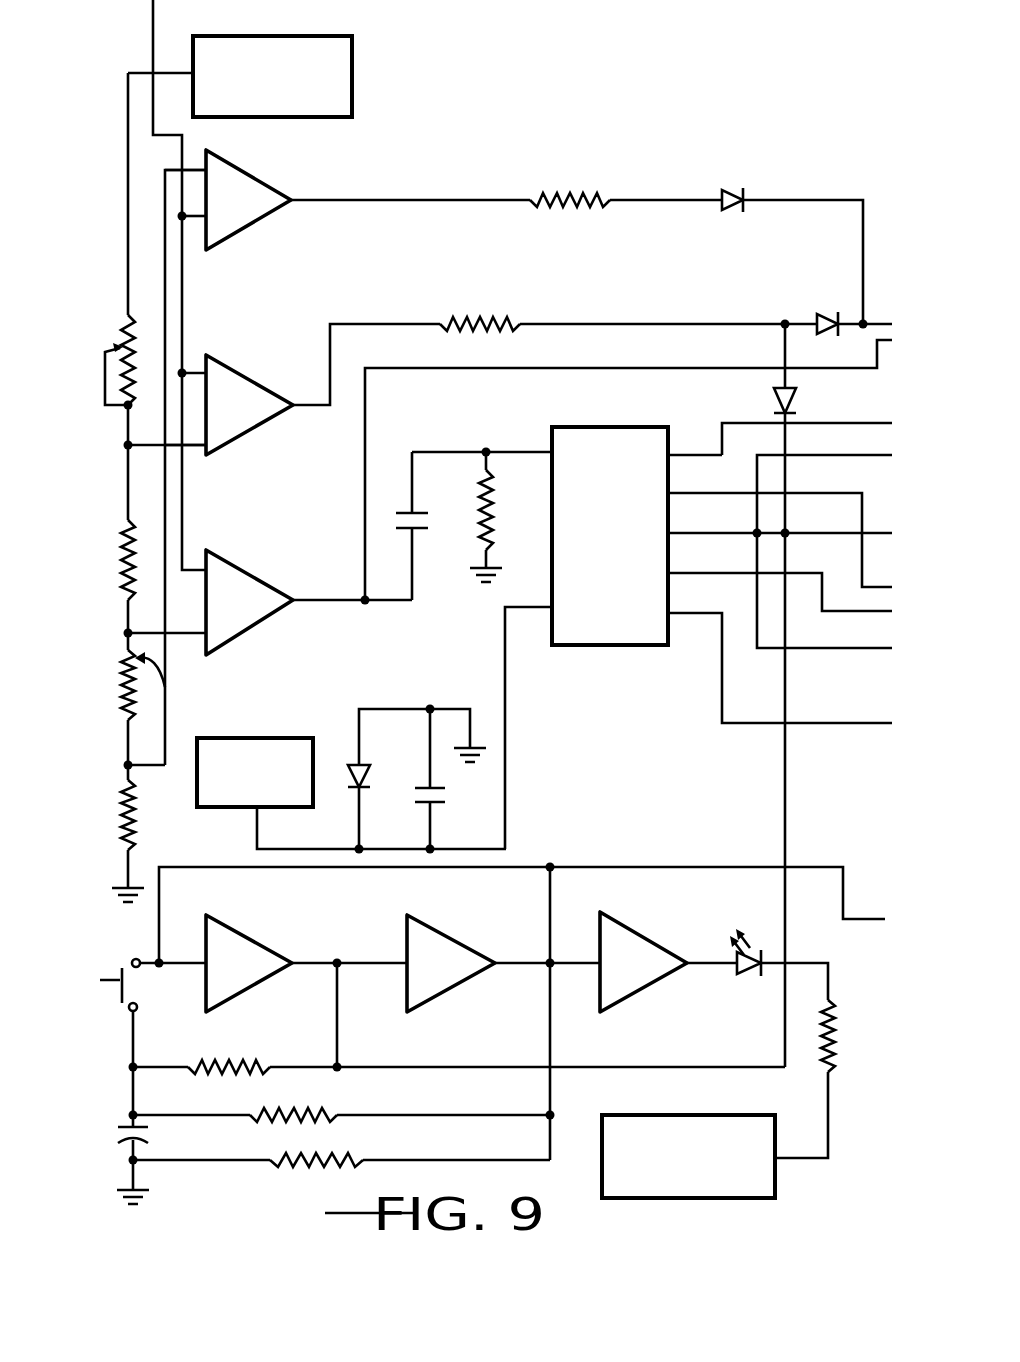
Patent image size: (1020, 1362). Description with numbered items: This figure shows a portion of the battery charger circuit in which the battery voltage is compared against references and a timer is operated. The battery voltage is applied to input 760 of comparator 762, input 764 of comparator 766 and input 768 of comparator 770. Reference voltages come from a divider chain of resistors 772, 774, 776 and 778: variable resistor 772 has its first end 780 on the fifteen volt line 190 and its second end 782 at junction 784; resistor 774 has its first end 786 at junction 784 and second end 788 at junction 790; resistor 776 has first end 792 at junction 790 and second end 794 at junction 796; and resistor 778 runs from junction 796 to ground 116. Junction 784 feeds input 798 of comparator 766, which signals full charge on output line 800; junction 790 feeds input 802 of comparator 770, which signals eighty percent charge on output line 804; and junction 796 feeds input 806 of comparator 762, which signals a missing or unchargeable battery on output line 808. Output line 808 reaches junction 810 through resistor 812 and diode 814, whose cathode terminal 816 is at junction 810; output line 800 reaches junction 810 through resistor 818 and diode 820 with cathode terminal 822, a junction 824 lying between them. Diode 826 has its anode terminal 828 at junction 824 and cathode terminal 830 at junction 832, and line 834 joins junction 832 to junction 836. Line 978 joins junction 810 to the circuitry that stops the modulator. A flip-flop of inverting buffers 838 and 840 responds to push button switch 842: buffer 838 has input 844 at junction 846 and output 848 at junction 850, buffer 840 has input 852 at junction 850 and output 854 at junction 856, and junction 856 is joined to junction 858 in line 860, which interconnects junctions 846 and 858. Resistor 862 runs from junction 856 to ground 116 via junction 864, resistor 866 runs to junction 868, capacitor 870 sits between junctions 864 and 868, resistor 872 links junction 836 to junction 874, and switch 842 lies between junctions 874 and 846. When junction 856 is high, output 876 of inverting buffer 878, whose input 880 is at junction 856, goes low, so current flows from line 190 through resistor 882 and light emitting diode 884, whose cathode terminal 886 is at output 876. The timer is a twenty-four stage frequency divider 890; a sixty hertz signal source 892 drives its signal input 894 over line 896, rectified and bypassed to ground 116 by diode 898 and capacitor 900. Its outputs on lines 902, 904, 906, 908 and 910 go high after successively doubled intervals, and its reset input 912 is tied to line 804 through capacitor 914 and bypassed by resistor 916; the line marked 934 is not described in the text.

The 15 volt line 190 is at (352, 73).
The ground 116 is at (136, 885).
The input of comparator 762 760 is at (186, 220).
The comparator 762 is at (262, 185).
The input of comparator 766 764 is at (206, 357).
The comparator 766 is at (258, 382).
The input of comparator 770 768 is at (206, 556).
The comparator 770 is at (258, 578).
The variable resistor 772 is at (122, 345).
The resistor 774 is at (124, 560).
The resistor 776 is at (124, 705).
The resistor 778 is at (136, 797).
The first end of resistor 772 780 is at (127, 272).
The second end of resistor 772 782 is at (113, 419).
The junction 784 is at (127, 445).
The first end of resistor 774 786 is at (124, 520).
The second end of resistor 774 788 is at (126, 605).
The junction 790 is at (126, 640).
The first end of resistor 776 792 is at (168, 690).
The second end of resistor 776 794 is at (133, 752).
The junction 796 is at (127, 765).
The input of comparator 766 798 is at (206, 455).
The output line 800 is at (340, 323).
The input of comparator 770 802 is at (206, 652).
The output line 804 is at (320, 604).
The input of comparator 762 806 is at (206, 158).
The output line 808 is at (373, 200).
The junction 810 is at (863, 330).
The resistor 812 is at (540, 200).
The diode 814 is at (728, 195).
The cathode terminal of diode 814 816 is at (768, 200).
The resistor 818 is at (463, 323).
The diode 820 is at (815, 318).
The cathode terminal of diode 820 822 is at (838, 320).
The junction 824 is at (780, 322).
The diode 826 is at (797, 400).
The anode terminal of diode 826 828 is at (783, 358).
The cathode terminal of diode 826 830 is at (788, 437).
The junction 832 is at (786, 533).
The line 834 is at (786, 800).
The junction 836 is at (340, 1067).
The inverting buffer 838 is at (240, 935).
The inverting buffer 840 is at (478, 912).
The push button switch 842 is at (113, 977).
The input of inverting buffer 838 844 is at (182, 948).
The junction 846 is at (159, 968).
The output of inverting buffer 838 848 is at (312, 963).
The junction 850 is at (340, 962).
The input of inverting buffer 840 852 is at (360, 975).
The output of inverting buffer 840 854 is at (512, 963).
The junction 856 is at (530, 967).
The junction 858 is at (551, 866).
The line 860 is at (226, 867).
The resistor 862 is at (318, 1158).
The junction 864 is at (137, 1158).
The resistor 866 is at (288, 1113).
The junction 868 is at (137, 1114).
The capacitor 870 is at (125, 1125).
The resistor 872 is at (262, 1067).
The junction 874 is at (137, 1066).
The output of inverting buffer 878 876 is at (692, 967).
The inverting buffer 878 is at (660, 909).
The input of inverting buffer 878 880 is at (577, 967).
The resistor 882 is at (836, 1030).
The light emitting diode 884 is at (748, 978).
The cathode terminal of diode 884 886 is at (724, 957).
The frequency divider 890 is at (625, 645).
The 60 Hz signal source 892 is at (275, 738).
The signal input 894 is at (530, 610).
The line 896 is at (338, 849).
The diode 898 is at (370, 775).
The capacitor 900 is at (435, 805).
The line 902 is at (690, 455).
The line 904 is at (684, 493).
The line 906 is at (686, 533).
The line 908 is at (686, 573).
The line 910 is at (686, 613).
The reset input 912 is at (550, 452).
The capacitor 914 is at (443, 498).
The resistor 916 is at (480, 523).
The line 934 is at (878, 533).
The line 978 is at (873, 322).